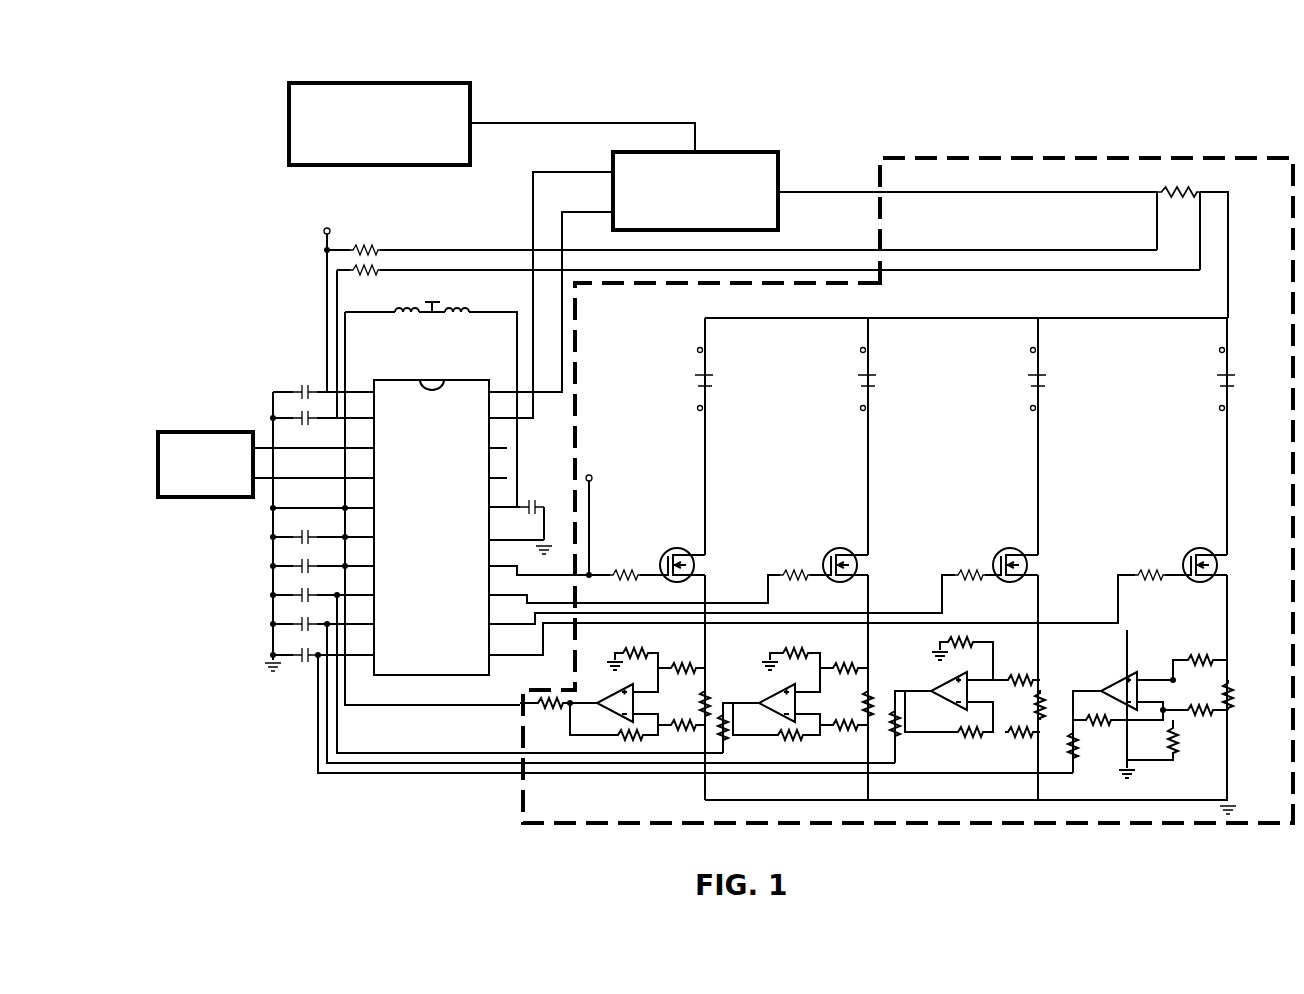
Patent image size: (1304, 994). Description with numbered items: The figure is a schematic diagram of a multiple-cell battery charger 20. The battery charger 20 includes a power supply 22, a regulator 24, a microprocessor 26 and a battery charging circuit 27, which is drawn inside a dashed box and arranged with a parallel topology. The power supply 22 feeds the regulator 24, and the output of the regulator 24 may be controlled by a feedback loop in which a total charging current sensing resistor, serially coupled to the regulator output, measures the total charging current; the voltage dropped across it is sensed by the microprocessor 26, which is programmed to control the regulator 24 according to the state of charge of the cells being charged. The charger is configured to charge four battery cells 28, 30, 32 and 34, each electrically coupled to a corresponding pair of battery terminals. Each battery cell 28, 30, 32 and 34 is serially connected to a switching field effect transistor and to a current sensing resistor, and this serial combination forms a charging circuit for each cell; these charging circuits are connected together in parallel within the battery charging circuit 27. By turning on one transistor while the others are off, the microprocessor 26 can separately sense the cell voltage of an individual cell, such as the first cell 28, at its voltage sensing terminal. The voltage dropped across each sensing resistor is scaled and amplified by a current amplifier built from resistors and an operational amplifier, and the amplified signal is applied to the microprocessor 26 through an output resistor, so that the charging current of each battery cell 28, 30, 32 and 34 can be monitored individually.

The battery charger 20 is at (1169, 60).
The power supply 22 is at (470, 90).
The regulator 24 is at (780, 158).
The microprocessor 26 is at (447, 677).
The battery charging circuit 27 is at (1193, 160).
The battery cell 28 is at (722, 378).
The battery cell 30 is at (885, 378).
The battery cell 32 is at (1055, 378).
The battery cell 34 is at (1240, 378).